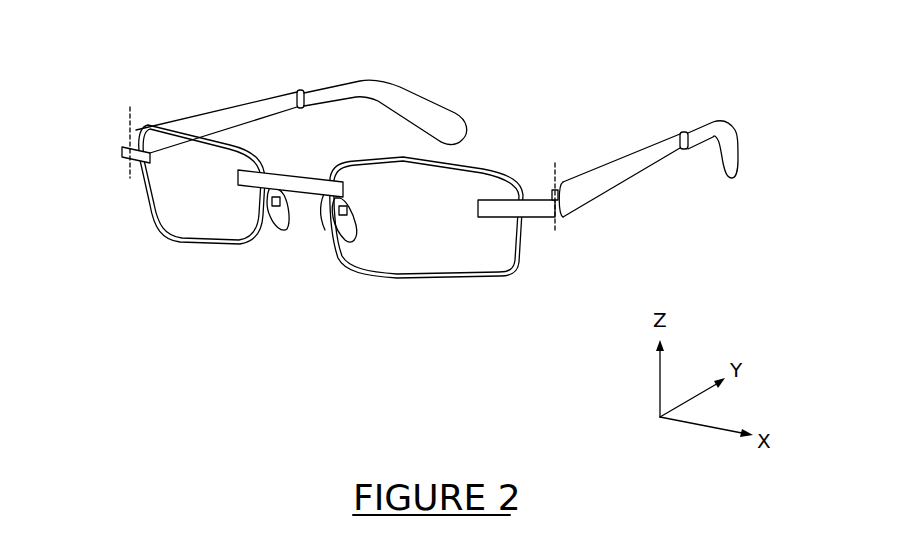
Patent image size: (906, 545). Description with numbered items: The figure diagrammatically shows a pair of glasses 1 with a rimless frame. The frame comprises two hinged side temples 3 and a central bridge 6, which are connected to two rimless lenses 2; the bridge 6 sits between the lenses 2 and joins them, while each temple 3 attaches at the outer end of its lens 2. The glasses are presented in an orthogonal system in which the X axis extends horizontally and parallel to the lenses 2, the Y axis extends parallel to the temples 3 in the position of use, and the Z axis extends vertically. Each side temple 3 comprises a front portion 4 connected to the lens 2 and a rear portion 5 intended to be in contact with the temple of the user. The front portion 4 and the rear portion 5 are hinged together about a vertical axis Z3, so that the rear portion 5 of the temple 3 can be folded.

The pair of glasses 1 is at (535, 102).
The rimless lens 2 is at (177, 208).
The side temple 3 is at (423, 83).
The front portion 4 is at (126, 143).
The rear portion 5 is at (260, 99).
The central bridge 6 is at (287, 183).
The vertical axis Z3 is at (343, 159).